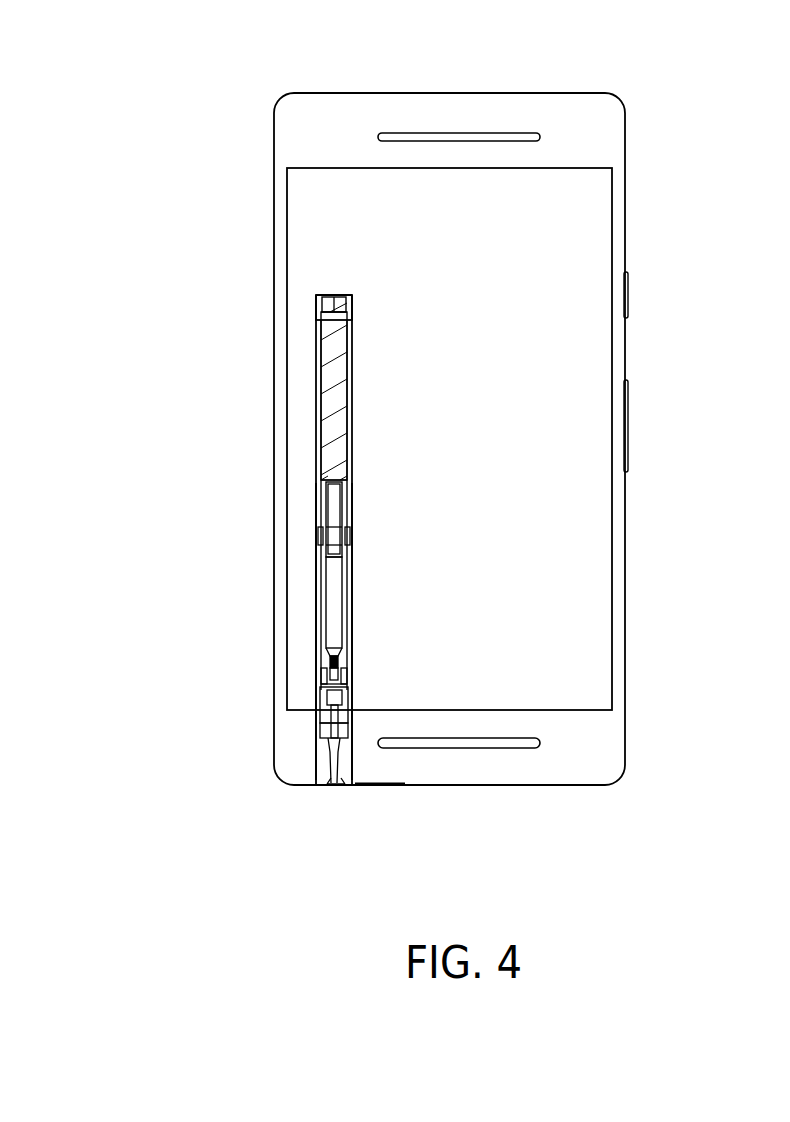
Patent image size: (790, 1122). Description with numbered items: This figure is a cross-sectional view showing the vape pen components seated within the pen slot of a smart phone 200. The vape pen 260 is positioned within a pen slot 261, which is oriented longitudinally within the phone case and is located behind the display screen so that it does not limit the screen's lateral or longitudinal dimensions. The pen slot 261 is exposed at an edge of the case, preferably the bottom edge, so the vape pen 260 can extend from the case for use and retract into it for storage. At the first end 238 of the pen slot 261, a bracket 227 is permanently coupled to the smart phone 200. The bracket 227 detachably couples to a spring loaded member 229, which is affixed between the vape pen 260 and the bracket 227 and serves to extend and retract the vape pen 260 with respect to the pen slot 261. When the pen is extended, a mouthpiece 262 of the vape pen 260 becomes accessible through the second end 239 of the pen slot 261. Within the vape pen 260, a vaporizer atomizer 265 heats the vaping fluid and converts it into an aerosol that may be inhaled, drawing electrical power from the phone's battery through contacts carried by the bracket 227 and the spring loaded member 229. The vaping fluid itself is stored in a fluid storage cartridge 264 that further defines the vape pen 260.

The smart phone 200 is at (625, 82).
The bracket 227 is at (313, 294).
The spring loaded member 229 is at (267, 292).
The first end 238 is at (186, 275).
The second end 239 is at (194, 790).
The vape pen 260 is at (267, 483).
The pen slot 261 is at (350, 502).
The mouthpiece 262 is at (328, 783).
The fluid storage cartridge 264 is at (350, 591).
The vaporizer atomizer 265 is at (350, 529).